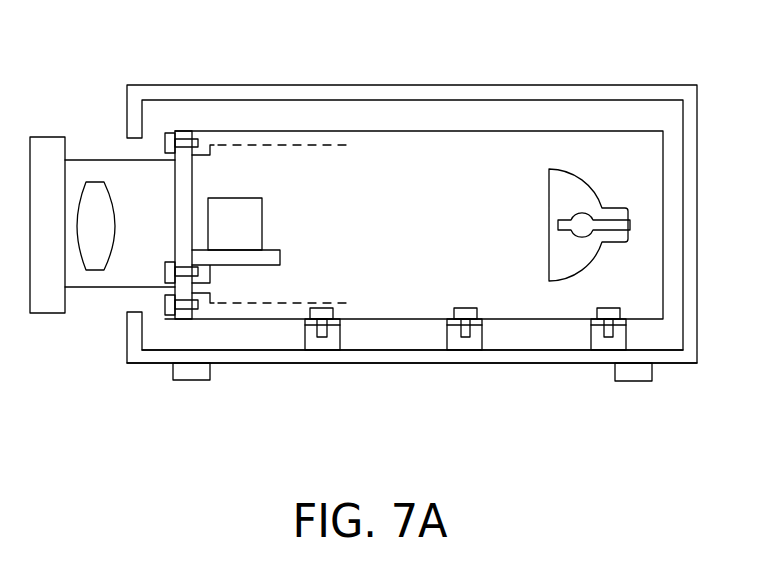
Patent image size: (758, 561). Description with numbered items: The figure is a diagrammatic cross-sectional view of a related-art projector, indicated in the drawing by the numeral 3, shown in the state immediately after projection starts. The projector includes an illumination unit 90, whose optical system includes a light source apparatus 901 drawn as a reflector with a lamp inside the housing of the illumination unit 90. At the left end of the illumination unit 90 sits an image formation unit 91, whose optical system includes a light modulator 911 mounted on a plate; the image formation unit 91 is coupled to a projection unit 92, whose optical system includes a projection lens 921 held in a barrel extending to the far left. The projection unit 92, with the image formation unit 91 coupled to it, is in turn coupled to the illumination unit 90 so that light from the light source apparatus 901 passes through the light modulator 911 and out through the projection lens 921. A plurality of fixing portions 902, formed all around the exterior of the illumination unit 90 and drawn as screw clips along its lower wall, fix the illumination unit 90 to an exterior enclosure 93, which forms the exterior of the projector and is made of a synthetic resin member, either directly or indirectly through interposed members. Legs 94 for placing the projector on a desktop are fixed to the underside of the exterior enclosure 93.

The projector 3 is at (657, 51).
The illumination unit 90 is at (433, 131).
The light source apparatus 901 is at (583, 180).
The fixing portions 902 is at (340, 322).
The image formation unit 91 is at (181, 225).
The light modulator 911 is at (262, 218).
The projection unit 92 is at (110, 160).
The projection lens 921 is at (97, 181).
The exterior enclosure 93 is at (508, 364).
The legs 94 is at (190, 381).